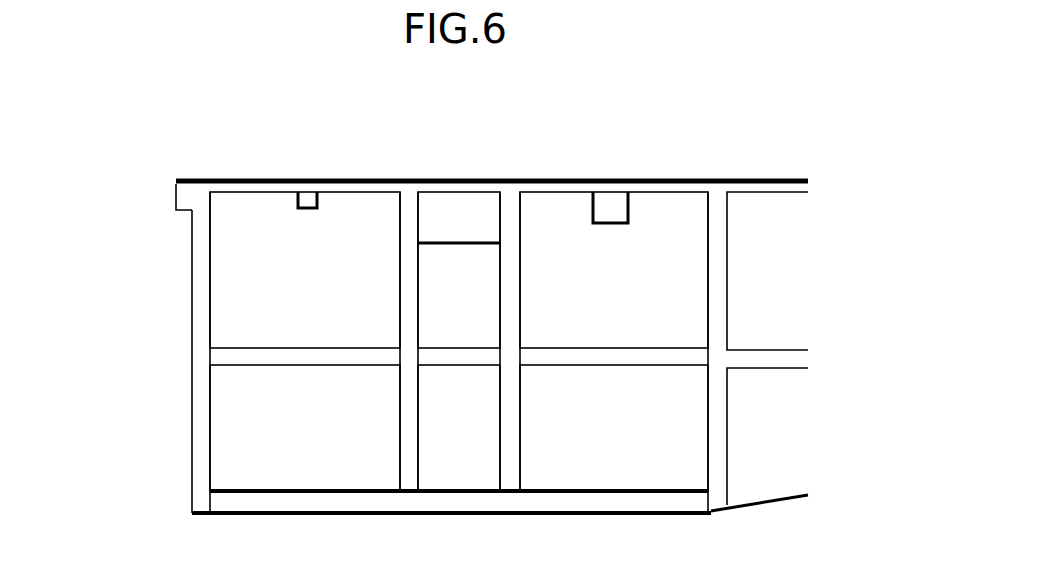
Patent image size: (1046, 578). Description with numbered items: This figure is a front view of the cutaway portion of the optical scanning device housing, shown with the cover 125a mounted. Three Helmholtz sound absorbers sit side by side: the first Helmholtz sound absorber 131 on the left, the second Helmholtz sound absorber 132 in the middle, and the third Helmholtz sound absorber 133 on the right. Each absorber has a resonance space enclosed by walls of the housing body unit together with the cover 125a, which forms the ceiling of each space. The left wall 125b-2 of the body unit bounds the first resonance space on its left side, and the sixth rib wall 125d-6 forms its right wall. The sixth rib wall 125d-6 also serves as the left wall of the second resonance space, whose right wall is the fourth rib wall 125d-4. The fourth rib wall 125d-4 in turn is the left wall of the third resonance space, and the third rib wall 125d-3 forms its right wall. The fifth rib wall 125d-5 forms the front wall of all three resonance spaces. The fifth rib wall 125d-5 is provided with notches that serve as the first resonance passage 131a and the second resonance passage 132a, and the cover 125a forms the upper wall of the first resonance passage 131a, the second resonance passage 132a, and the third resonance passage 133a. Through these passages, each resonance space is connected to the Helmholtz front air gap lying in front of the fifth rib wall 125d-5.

The cover 125a is at (183, 186).
The left wall of the body unit 125b-2 is at (192, 328).
The third rib wall 125d-3 is at (727, 265).
The fourth rib wall 125d-4 is at (520, 322).
The fifth rib wall 125d-5 is at (670, 444).
The sixth rib wall 125d-6 is at (400, 328).
The first Helmholtz sound absorber 131 is at (202, 160).
The first resonance passage 131a is at (308, 210).
The second Helmholtz sound absorber 132 is at (510, 160).
The second resonance passage 132a is at (455, 246).
The third Helmholtz sound absorber 133 is at (712, 160).
The third resonance passage 133a is at (612, 226).